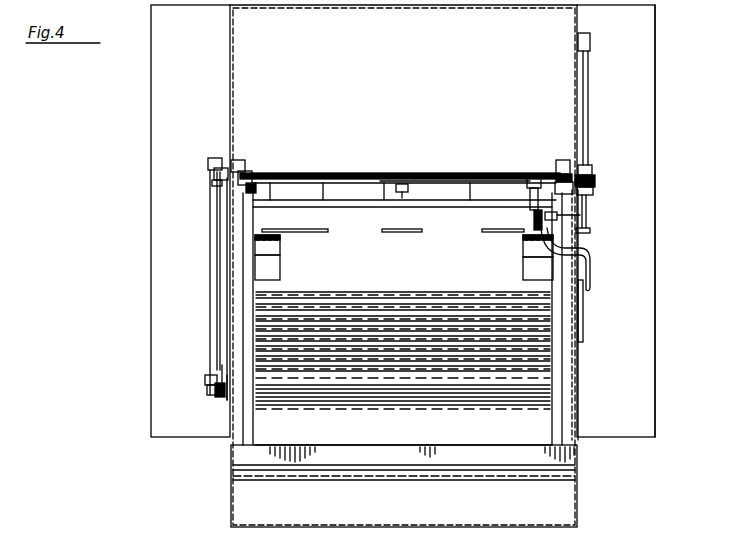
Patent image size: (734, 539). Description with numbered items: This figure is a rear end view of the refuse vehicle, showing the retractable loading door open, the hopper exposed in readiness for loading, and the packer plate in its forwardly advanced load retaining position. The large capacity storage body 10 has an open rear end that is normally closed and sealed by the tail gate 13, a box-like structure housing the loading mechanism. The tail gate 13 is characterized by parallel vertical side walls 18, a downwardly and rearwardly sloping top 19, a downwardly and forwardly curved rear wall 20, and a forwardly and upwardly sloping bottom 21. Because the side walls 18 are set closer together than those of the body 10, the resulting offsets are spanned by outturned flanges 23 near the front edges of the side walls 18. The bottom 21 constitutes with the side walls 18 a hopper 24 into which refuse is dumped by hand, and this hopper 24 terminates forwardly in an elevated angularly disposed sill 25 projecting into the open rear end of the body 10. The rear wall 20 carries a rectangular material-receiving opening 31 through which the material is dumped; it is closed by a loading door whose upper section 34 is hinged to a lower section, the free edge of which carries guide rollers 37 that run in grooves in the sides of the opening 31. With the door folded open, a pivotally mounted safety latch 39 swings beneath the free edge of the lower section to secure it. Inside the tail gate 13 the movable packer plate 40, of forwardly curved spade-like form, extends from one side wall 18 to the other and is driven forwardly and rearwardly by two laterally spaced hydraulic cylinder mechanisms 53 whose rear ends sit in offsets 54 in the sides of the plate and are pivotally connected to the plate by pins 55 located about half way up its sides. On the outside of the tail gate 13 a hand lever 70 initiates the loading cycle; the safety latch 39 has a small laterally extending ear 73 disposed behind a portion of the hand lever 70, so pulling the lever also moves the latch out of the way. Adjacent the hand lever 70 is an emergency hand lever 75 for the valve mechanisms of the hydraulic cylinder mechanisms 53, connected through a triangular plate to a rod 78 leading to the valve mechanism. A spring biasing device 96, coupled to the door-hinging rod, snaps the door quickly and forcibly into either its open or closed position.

The storage body 10 is at (658, 52).
The tail gate 13 is at (233, 98).
The side walls 18 is at (226, 357).
The top 19 is at (416, 61).
The rear wall 20 is at (412, 505).
The bottom 21 is at (258, 522).
The outturned flanges 23 is at (158, 184).
The hopper 24 is at (416, 436).
The sill 25 is at (403, 350).
The material-receiving opening 31 is at (551, 327).
The upper section 34 is at (440, 190).
The guide rollers 37 is at (247, 170).
The safety latch 39 is at (528, 190).
The packer plate 40 is at (480, 355).
The hydraulic cylinder mechanisms 53 is at (265, 231).
The offset 54 is at (272, 268).
The pins 55 is at (282, 250).
The hand lever 70 is at (594, 278).
The ear 73 is at (553, 218).
The hand lever 75 is at (590, 230).
The rod 78 is at (586, 97).
The spring biasing device 96 is at (211, 262).